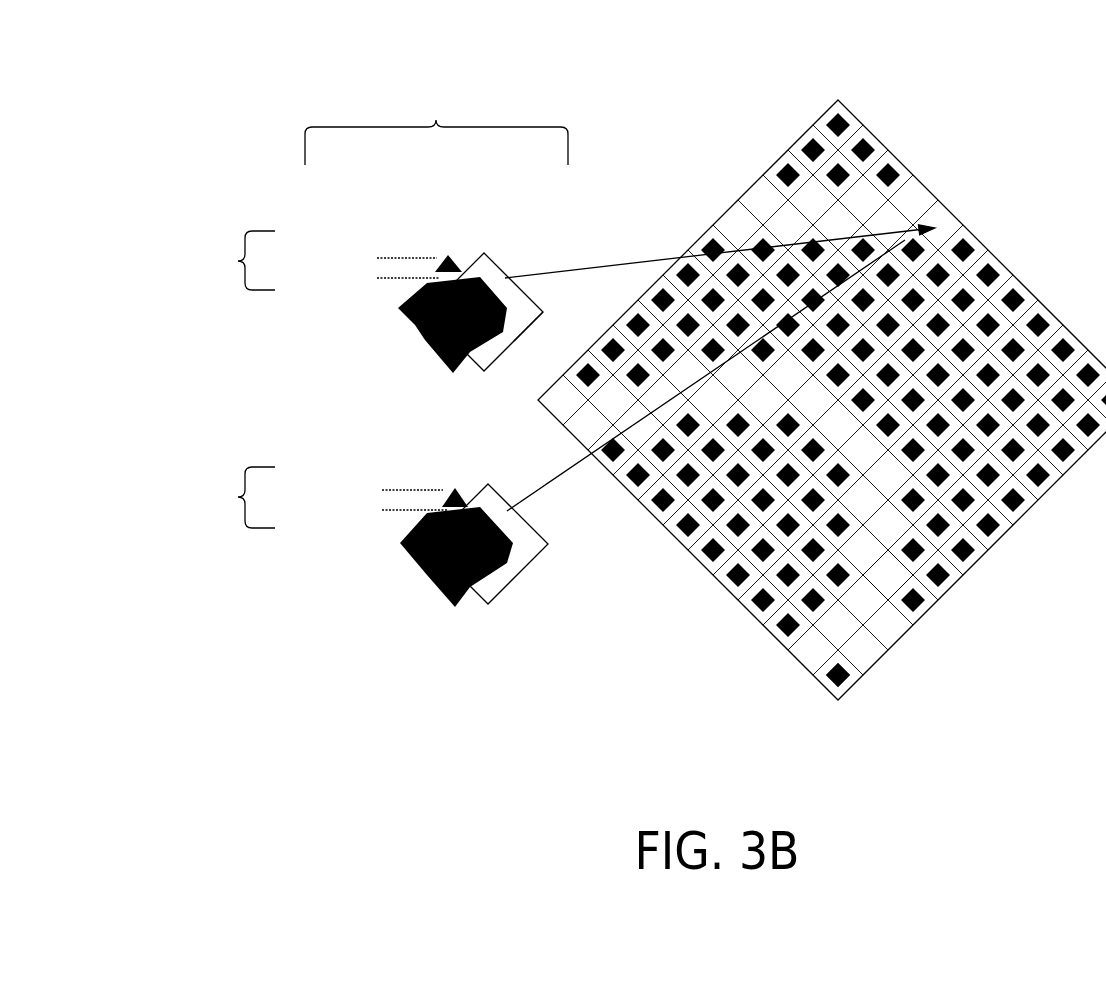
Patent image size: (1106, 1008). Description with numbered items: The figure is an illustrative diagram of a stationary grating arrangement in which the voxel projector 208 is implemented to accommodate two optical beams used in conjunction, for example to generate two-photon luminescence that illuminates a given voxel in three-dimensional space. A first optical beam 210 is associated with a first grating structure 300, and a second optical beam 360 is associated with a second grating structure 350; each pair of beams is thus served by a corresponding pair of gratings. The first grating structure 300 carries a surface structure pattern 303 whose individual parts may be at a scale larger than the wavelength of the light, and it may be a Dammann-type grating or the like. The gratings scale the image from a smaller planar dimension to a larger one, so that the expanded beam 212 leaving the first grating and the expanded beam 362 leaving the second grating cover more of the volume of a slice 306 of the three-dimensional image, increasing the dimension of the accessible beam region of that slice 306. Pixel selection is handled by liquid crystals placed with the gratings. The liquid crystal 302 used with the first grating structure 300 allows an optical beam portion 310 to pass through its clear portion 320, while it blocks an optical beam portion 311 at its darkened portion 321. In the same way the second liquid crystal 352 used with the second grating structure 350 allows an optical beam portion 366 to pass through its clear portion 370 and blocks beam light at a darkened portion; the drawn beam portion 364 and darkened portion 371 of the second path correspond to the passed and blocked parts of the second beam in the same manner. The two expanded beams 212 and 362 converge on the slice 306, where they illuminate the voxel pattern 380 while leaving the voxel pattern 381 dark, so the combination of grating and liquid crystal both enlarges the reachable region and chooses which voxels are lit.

The voxel projector 208 is at (436, 120).
The first optical beam 210 is at (238, 261).
The expanded beam 212 is at (607, 266).
The first grating structure 300 is at (455, 312).
The liquid crystal 302 is at (420, 348).
The surface structure pattern 303 is at (528, 298).
The slice 306 is at (937, 190).
The optical beam portion 310 is at (390, 278).
The optical beam portion 311 is at (423, 256).
The clear portion 320 is at (393, 318).
The darkened portion 321 is at (398, 308).
The second grating structure 350 is at (446, 551).
The second liquid crystal 352 is at (430, 587).
The second optical beam 360 is at (238, 497).
The expanded beam 362 is at (555, 487).
The third row line 364 is at (400, 510).
The optical beam portion 366 is at (418, 488).
The clear portion 370 is at (398, 550).
The fourth dark pixel cluster 371 is at (408, 537).
The voxel pattern 380 is at (890, 578).
The voxel pattern 381 is at (825, 688).